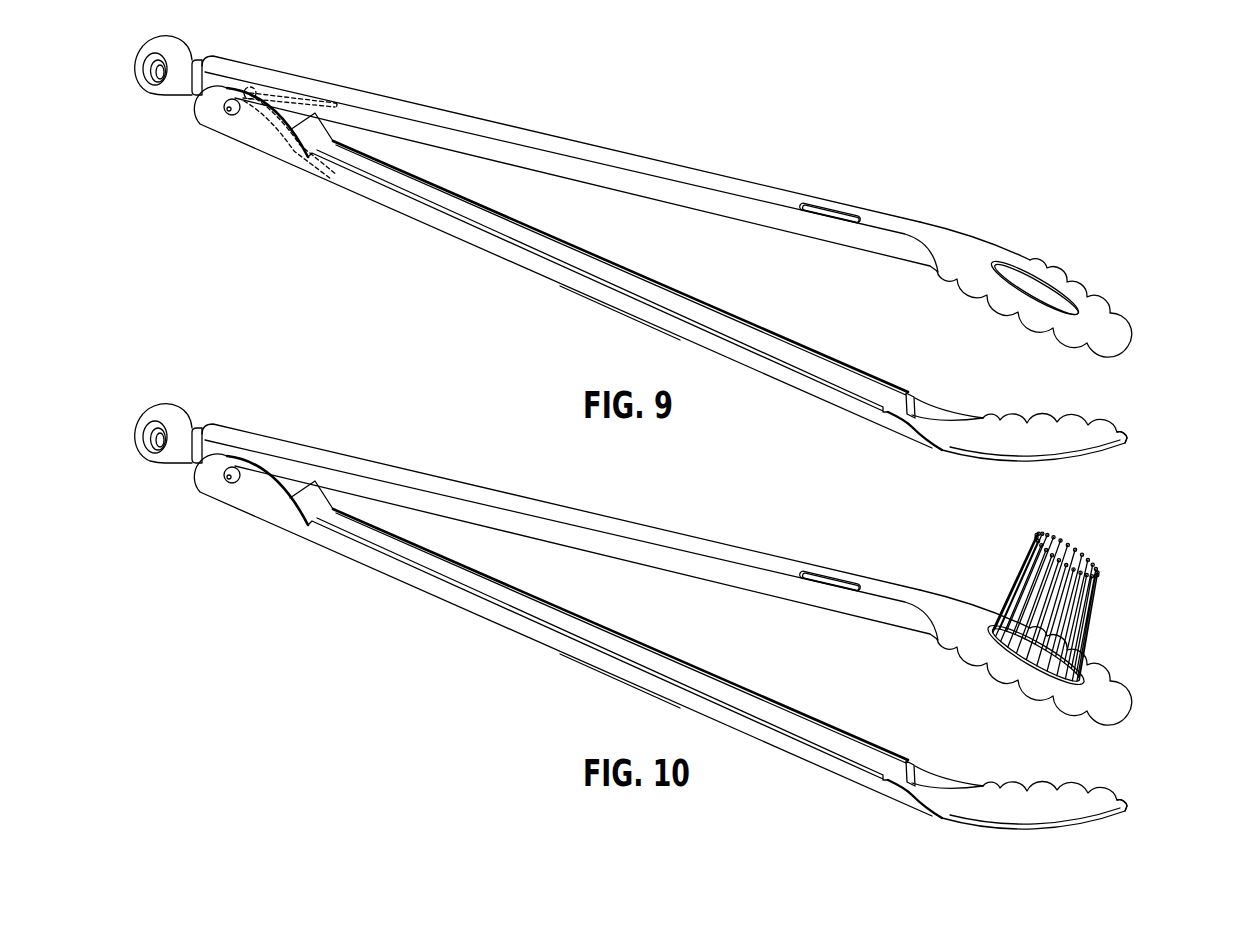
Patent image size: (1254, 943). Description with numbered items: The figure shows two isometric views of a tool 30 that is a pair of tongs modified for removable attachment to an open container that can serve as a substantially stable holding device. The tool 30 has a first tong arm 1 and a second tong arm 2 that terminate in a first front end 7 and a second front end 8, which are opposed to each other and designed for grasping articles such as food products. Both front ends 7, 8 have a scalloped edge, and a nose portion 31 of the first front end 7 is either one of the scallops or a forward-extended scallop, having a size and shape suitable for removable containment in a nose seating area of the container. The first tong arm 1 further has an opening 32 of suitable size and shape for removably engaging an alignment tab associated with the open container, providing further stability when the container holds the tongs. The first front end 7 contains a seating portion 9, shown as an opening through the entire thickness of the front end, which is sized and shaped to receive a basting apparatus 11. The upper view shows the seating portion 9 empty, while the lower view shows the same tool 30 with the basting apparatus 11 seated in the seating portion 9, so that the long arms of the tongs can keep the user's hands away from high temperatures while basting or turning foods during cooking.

In FIG. 9, the first tong arm 1 is at (668, 162).
In FIG. 10, the first tong arm 1 is at (570, 532).
In FIG. 9, the second tong arm 2 is at (572, 290).
In FIG. 10, the second tong arm 2 is at (568, 636).
In FIG. 9, the first front end 7 is at (1001, 236).
In FIG. 10, the first front end 7 is at (1026, 622).
In FIG. 9, the second front end 8 is at (917, 451).
In FIG. 10, the second front end 8 is at (1002, 815).
In FIG. 9, the seating portion 9 is at (1088, 290).
In FIG. 10, the basting apparatus 11 is at (1028, 588).
In FIG. 9, the tool 30 is at (729, 386).
In FIG. 10, the tool 30 is at (668, 736).
In FIG. 9, the nose portion 31 is at (1130, 442).
In FIG. 10, the nose portion 31 is at (1158, 806).
In FIG. 9, the opening 32 is at (838, 194).
In FIG. 10, the opening 32 is at (828, 547).